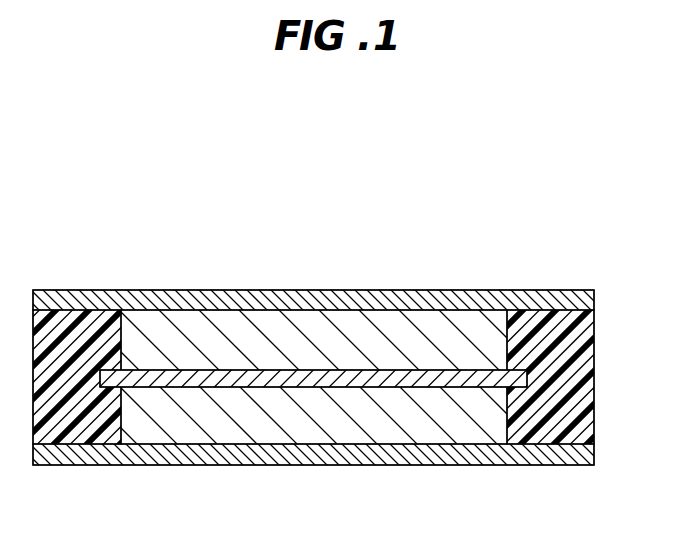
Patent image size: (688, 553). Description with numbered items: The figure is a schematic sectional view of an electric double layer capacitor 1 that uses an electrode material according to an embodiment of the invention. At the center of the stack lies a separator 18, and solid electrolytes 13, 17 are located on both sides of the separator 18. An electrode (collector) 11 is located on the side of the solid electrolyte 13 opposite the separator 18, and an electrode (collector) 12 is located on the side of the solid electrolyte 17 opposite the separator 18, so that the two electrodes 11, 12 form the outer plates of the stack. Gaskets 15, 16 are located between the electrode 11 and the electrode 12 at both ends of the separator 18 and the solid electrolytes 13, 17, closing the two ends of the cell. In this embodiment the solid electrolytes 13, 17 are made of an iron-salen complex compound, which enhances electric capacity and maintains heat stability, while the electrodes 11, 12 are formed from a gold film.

The electric double layer capacitor 1 is at (607, 194).
The electrode (collector) 11 is at (242, 458).
The electrode (collector) 12 is at (236, 300).
The solid electrolyte 13 is at (350, 430).
The gasket 15 is at (75, 330).
The gasket 16 is at (540, 320).
The solid electrolyte 17 is at (343, 322).
The separator 18 is at (414, 372).